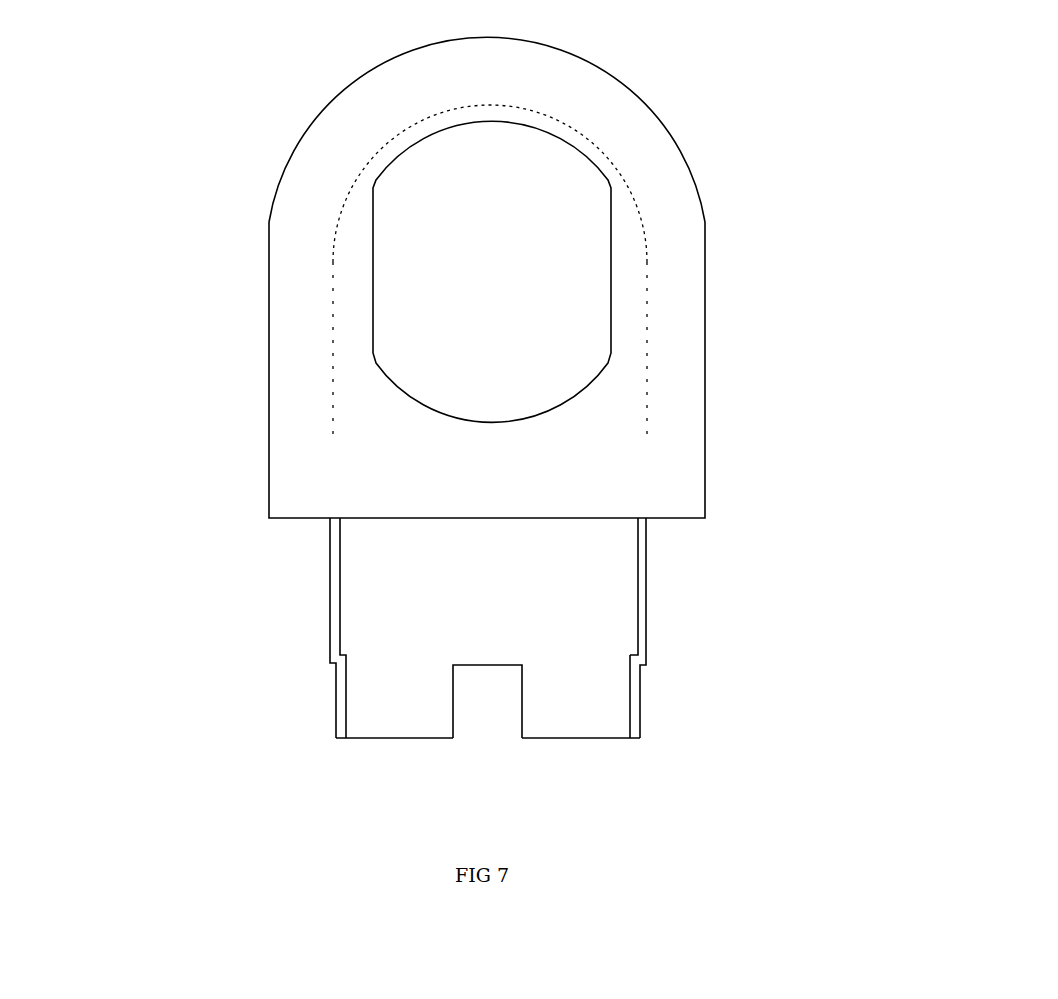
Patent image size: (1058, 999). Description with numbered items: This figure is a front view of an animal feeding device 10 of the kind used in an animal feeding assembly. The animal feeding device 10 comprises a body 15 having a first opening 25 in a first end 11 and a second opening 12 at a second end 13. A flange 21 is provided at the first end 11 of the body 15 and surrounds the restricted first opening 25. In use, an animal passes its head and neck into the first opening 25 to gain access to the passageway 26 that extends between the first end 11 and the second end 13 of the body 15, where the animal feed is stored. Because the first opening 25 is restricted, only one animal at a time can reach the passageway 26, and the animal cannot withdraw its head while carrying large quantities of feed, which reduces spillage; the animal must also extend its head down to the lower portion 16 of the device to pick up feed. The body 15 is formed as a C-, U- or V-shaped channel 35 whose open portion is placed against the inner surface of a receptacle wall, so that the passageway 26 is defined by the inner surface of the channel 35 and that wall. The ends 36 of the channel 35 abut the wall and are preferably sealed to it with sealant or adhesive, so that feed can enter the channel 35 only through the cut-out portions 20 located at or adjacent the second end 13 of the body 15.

The animal feeding device 10 is at (724, 250).
The first end 11 is at (636, 168).
The second opening 12 is at (569, 753).
The second end 13 is at (379, 750).
The body 15 is at (301, 550).
The lower portion 16 is at (350, 638).
The cut-out portions 20 is at (655, 690).
The flange 21 is at (299, 186).
The first opening 25 is at (523, 178).
The passageway 26 is at (617, 575).
The channel 35 is at (567, 667).
The ends 36 is at (320, 582).